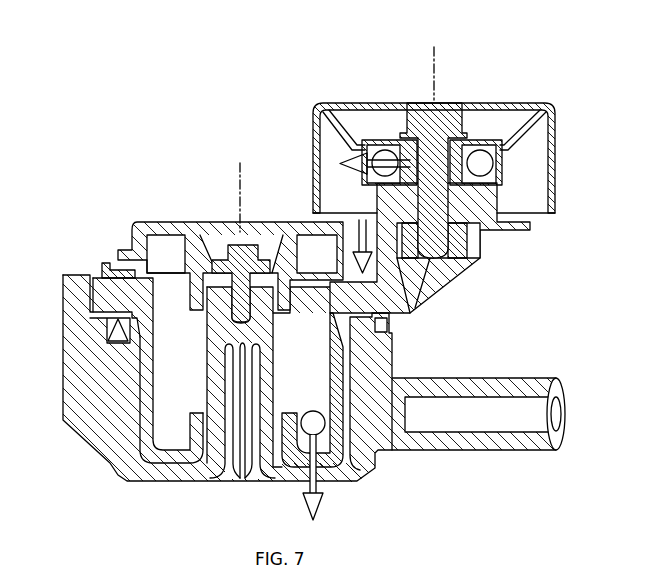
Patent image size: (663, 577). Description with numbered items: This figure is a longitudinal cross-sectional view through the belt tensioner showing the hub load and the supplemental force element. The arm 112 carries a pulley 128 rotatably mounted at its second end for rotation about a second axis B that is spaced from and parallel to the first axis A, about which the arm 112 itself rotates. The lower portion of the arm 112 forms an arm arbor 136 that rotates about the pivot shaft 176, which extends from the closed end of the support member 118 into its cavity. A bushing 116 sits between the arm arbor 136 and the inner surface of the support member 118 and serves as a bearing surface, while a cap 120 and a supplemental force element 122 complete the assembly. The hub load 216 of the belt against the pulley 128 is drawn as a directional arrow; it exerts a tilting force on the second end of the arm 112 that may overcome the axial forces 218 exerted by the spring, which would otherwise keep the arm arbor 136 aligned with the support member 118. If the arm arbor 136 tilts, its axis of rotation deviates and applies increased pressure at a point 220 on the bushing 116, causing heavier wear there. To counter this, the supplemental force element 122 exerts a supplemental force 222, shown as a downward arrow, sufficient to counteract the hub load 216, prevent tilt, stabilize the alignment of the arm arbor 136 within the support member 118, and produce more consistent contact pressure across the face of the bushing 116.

The arm 112 is at (380, 297).
The bushing 116 is at (137, 432).
The support member 118 is at (77, 402).
The cap 120 is at (158, 222).
The supplemental force element 122 is at (116, 263).
The pulley 128 is at (553, 166).
The arm arbor 136 is at (335, 389).
The pivot shaft 176 is at (212, 370).
The hub load 216 is at (387, 152).
The axial forces 218 is at (320, 493).
The point 220 is at (105, 336).
The supplemental force 222 is at (356, 225).